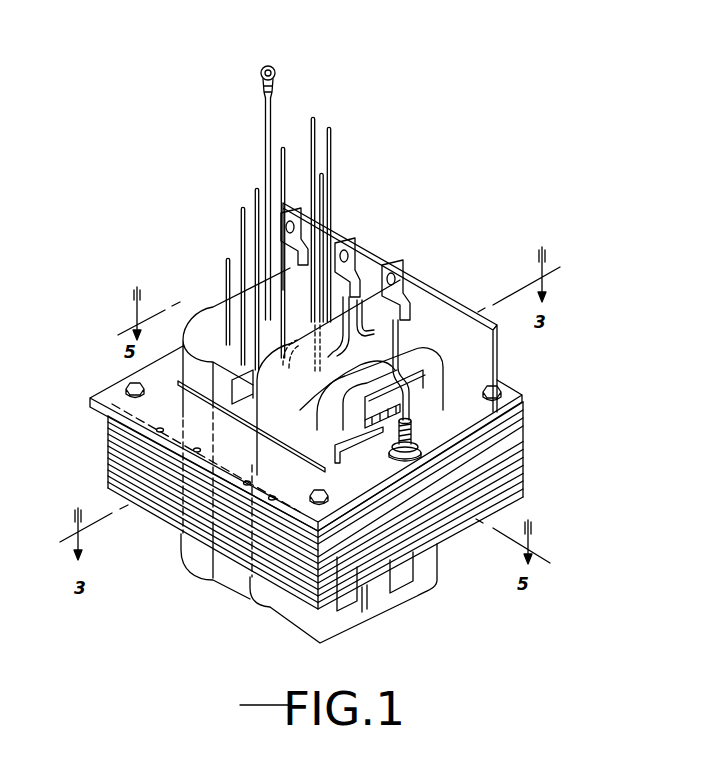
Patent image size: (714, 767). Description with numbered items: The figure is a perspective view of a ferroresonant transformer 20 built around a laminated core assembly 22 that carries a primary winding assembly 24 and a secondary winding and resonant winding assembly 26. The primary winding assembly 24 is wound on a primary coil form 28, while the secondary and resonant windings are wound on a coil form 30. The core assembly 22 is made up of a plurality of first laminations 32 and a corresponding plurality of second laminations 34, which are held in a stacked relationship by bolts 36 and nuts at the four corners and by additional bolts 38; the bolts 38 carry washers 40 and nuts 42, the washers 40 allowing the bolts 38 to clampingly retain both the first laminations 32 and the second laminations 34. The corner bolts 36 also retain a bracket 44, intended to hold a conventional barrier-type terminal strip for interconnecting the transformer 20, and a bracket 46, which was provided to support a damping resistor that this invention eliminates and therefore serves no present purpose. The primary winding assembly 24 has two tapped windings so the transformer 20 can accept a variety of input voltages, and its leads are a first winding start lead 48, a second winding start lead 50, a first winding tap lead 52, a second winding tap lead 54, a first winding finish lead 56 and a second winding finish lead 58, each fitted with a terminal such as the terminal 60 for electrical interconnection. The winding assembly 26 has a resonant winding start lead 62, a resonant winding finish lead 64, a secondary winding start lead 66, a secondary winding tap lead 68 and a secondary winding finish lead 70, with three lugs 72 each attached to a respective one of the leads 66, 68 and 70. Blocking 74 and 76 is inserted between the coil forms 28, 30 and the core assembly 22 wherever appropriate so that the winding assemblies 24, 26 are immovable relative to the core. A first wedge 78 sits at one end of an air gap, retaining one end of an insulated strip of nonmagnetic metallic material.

The ferroresonant transformer 20 is at (428, 180).
The laminated core assembly 22 is at (318, 477).
The primary winding assembly 24 is at (202, 327).
The secondary winding and resonant winding assembly 26 is at (265, 433).
The primary coil form 28 is at (233, 376).
The coil form 30 is at (390, 400).
The first laminations 32 is at (527, 476).
The second laminations 34 is at (343, 413).
The bolts 36 is at (125, 386).
The bolts 38 is at (421, 447).
The washers 40 is at (524, 433).
The nuts 42 is at (522, 452).
The bracket 44 is at (92, 404).
The bracket 46 is at (497, 371).
The first winding start lead 48 is at (332, 137).
The second winding start lead 50 is at (316, 118).
The first winding tap lead 52 is at (298, 172).
The second winding tap lead 54 is at (257, 190).
The first winding finish lead 56 is at (243, 225).
The second winding finish lead 58 is at (227, 262).
The terminal 60 is at (274, 67).
The resonant winding start lead 62 is at (324, 180).
The resonant winding finish lead 64 is at (285, 147).
The secondary winding start lead 66 is at (297, 289).
The secondary winding tap lead 68 is at (373, 270).
The secondary winding finish lead 70 is at (399, 345).
The lugs 72 is at (291, 212).
The blocking 74 is at (387, 448).
The blocking 76 is at (418, 430).
The first wedge 78 is at (226, 398).